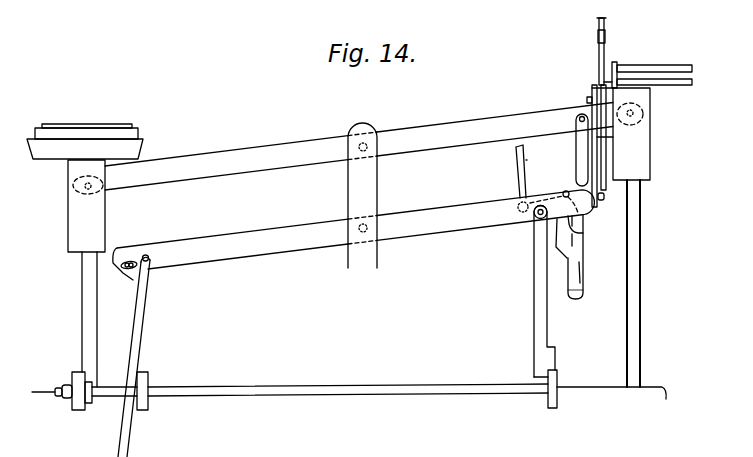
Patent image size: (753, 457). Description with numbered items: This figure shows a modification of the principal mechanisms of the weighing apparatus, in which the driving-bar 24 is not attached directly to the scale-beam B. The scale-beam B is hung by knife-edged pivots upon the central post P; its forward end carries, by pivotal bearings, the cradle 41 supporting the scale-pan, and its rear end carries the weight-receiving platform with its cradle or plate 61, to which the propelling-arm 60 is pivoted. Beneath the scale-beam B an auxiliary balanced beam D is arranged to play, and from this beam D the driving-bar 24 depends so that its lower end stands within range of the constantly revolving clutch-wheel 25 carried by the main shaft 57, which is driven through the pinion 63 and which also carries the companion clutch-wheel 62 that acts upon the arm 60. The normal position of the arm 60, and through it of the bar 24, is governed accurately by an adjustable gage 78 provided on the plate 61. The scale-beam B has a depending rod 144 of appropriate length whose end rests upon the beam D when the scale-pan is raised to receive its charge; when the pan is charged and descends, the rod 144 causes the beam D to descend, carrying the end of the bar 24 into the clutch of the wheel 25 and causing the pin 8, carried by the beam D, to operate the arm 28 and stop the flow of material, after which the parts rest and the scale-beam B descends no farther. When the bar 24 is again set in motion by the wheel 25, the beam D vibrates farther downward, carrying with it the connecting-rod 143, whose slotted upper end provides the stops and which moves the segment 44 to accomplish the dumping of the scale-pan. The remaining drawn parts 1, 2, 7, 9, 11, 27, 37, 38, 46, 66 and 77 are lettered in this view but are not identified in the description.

The pin 1 is at (583, 270).
The plate 2 is at (582, 102).
The pawl 7 is at (583, 245).
The pin 8 is at (554, 194).
The shoulder 9 is at (579, 234).
The arm 11 is at (575, 226).
The driving-bar 24 is at (555, 358).
The driving clutch-wheel 25 is at (557, 381).
The lever 27 is at (583, 257).
The arm 28 is at (573, 290).
The pawl 37 is at (518, 165).
The stop 38 is at (527, 160).
The cradle 41 is at (631, 237).
The segment 44 is at (604, 20).
The bracket arm 46 is at (670, 66).
The main shaft 57 is at (320, 398).
The propelling-arm 60 is at (128, 439).
The cradle 61 is at (86, 273).
The driving clutch-wheel 62 is at (148, 376).
The pinion 63 is at (72, 375).
The arm 66 is at (676, 88).
The head 77 is at (85, 141).
The adjustable gage 78 is at (127, 274).
The connecting-rod 143 is at (606, 147).
The depending rod 144 is at (575, 150).
The scale-beam B is at (265, 153).
The auxiliary balanced beam D is at (355, 229).
The central post P is at (362, 195).